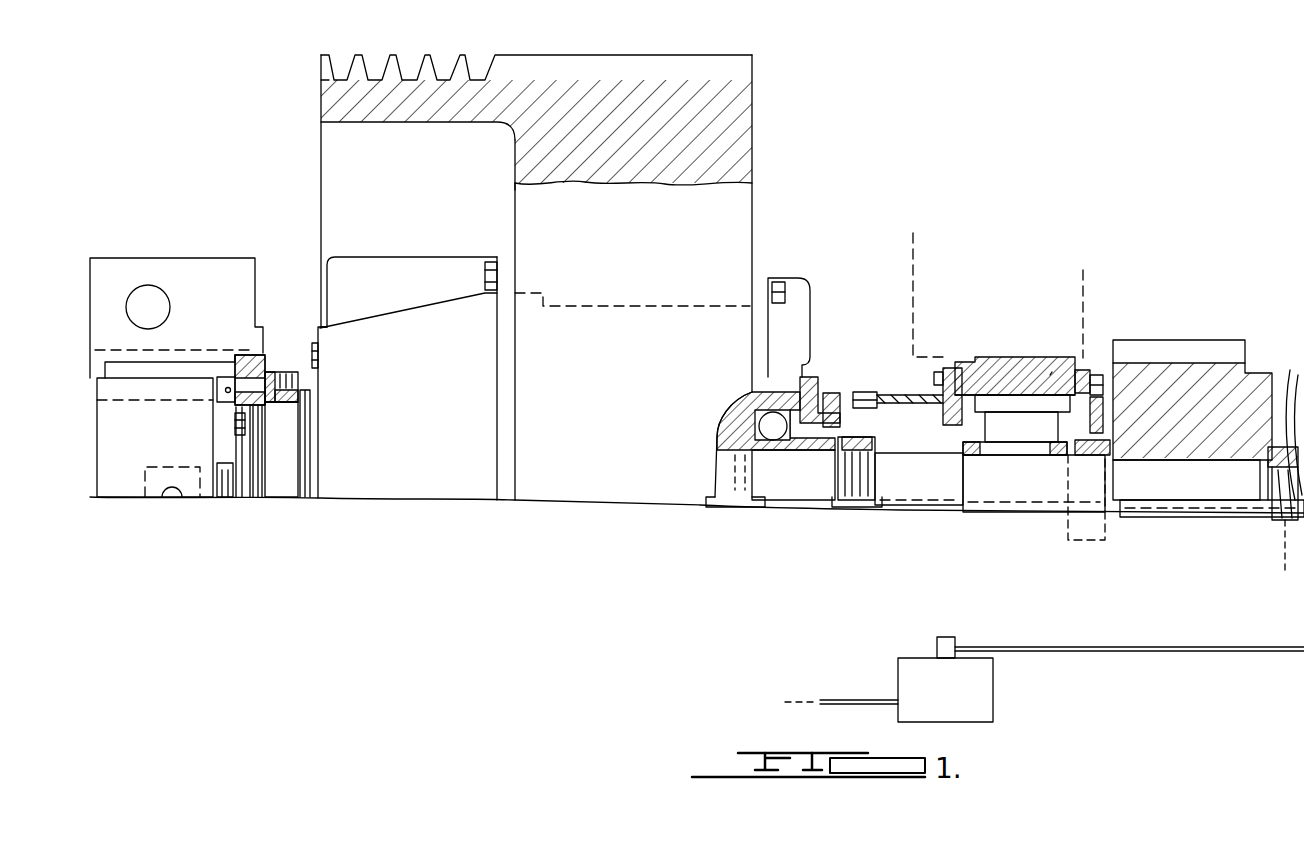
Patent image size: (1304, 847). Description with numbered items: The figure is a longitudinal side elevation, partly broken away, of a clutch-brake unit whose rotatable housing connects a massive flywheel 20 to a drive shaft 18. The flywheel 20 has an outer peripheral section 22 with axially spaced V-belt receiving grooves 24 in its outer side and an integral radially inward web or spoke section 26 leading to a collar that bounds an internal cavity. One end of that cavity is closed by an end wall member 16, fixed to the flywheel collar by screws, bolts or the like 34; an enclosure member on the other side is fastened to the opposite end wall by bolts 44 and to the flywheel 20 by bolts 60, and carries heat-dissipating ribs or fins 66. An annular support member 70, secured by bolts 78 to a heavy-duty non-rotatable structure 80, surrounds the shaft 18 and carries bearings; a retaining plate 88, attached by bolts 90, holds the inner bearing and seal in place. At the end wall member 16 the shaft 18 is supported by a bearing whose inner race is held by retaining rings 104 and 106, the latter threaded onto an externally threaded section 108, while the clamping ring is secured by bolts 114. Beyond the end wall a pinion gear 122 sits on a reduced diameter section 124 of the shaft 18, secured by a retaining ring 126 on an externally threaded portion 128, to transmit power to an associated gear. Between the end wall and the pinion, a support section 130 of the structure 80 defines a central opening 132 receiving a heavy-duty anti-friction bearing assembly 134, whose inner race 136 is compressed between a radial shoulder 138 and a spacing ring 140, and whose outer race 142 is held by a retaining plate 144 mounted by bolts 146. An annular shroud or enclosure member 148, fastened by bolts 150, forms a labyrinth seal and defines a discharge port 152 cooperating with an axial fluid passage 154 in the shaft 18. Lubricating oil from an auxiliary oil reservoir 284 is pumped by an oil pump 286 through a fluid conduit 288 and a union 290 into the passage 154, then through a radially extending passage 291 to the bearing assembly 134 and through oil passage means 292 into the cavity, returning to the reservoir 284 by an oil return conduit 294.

The end wall member 16 is at (802, 317).
The drive shaft 18 is at (808, 508).
The flywheel 20 is at (760, 110).
The outer peripheral section 22 is at (330, 102).
The V-belt receiving grooves 24 is at (345, 58).
The web or spoke section 26 is at (530, 199).
The screws, bolts or the like 34 is at (778, 278).
The screws, bolts or the like 44 is at (320, 352).
The screws, bolts or the like 60 is at (485, 270).
The ribs or fins 66 is at (372, 258).
The support member 70 is at (283, 370).
The screws, bolts or the like 78 is at (250, 354).
The non-rotatable structure 80 is at (90, 402).
The retaining plate 88 is at (245, 440).
The screws, bolts or the like 90 is at (236, 425).
The retaining ring 104 is at (810, 452).
The retaining ring 106 is at (868, 444).
The externally threaded section 108 is at (866, 478).
The screws, bolts or the like 114 is at (817, 377).
The pinion gear 122 is at (1258, 368).
The reduced diameter section 124 is at (1222, 516).
The retaining ring 126 is at (1300, 375).
The externally threaded portion 128 is at (1283, 500).
The support section 130 is at (1085, 262).
The central opening 132 is at (1018, 350).
The anti-friction bearing assembly 134 is at (966, 357).
The inner race 136 is at (1000, 425).
The radial shoulder 138 is at (919, 479).
The spacing ring 140 is at (1190, 480).
The outer race 142 is at (1042, 372).
The retaining plate 144 is at (1132, 373).
The screws, bolts or the like 146 is at (1088, 370).
The shroud or enclosure member 148 is at (890, 392).
The screws, bolts or the like 150 is at (932, 368).
The discharge port 152 is at (868, 392).
The fluid passage 154 is at (1068, 536).
The auxiliary oil reservoir 284 is at (978, 693).
The oil pump 286 is at (948, 637).
The fluid conduit 288 is at (1175, 652).
The union 290 is at (1285, 560).
The radially extending passage 291 is at (1068, 480).
The oil passage means 292 is at (712, 463).
The oil return conduit 294 is at (840, 700).